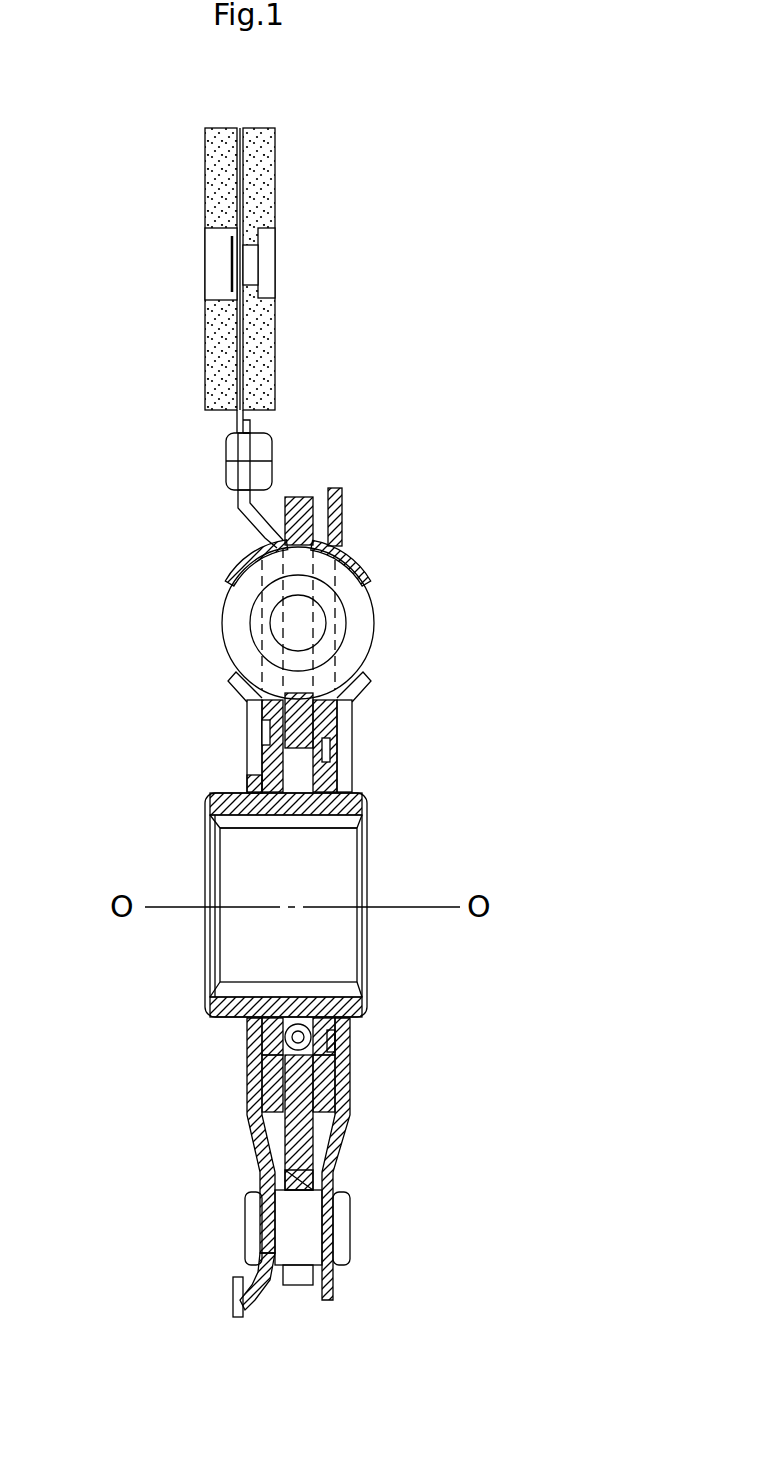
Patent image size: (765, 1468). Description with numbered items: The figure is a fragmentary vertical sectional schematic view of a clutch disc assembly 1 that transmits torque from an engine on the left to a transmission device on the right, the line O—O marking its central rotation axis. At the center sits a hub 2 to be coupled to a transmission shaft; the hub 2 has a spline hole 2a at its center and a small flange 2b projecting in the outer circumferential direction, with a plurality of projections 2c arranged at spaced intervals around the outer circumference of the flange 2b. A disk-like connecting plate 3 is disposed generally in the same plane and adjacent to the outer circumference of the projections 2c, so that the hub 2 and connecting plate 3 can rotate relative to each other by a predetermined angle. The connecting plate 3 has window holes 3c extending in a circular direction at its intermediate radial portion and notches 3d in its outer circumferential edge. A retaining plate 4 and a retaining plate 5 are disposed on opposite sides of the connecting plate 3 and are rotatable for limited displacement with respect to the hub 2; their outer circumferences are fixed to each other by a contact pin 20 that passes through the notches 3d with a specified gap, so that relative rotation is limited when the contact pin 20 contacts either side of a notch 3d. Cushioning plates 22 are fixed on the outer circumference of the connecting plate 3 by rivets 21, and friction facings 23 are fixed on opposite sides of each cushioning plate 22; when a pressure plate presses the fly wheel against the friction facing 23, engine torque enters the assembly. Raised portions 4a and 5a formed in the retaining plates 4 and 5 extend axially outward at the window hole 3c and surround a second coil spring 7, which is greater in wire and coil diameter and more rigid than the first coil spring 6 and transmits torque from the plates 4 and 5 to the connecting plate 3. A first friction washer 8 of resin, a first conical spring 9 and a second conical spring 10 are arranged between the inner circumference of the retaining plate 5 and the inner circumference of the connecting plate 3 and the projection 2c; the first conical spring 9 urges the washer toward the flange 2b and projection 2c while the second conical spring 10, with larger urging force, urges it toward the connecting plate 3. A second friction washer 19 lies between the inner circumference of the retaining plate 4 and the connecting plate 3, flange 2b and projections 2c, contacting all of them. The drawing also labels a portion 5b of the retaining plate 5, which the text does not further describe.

The clutch disc assembly 1 is at (455, 402).
The hub 2 is at (365, 805).
The spline hole 2a is at (310, 830).
The flange 2b is at (245, 793).
The projections 2c is at (262, 763).
The connecting plate 3 is at (317, 497).
The window holes 3c is at (353, 547).
The notches 3d is at (262, 1172).
The retaining plate 4 is at (245, 699).
The raised portion 4a is at (228, 575).
The retaining plate 5 is at (358, 701).
The raised portion 5a is at (375, 572).
The holder sleeve 5b is at (355, 790).
The first coil spring 6 is at (318, 1027).
The second coil spring 7 is at (380, 621).
The first friction washer 8 is at (345, 748).
The first conical spring 9 is at (343, 1057).
The second conical spring 10 is at (350, 1097).
The second friction washer 19 is at (250, 1075).
The contact pin 20 is at (305, 1228).
The rivets 21 is at (227, 465).
The cushioning plates 22 is at (237, 418).
The friction facings 23 is at (207, 336).